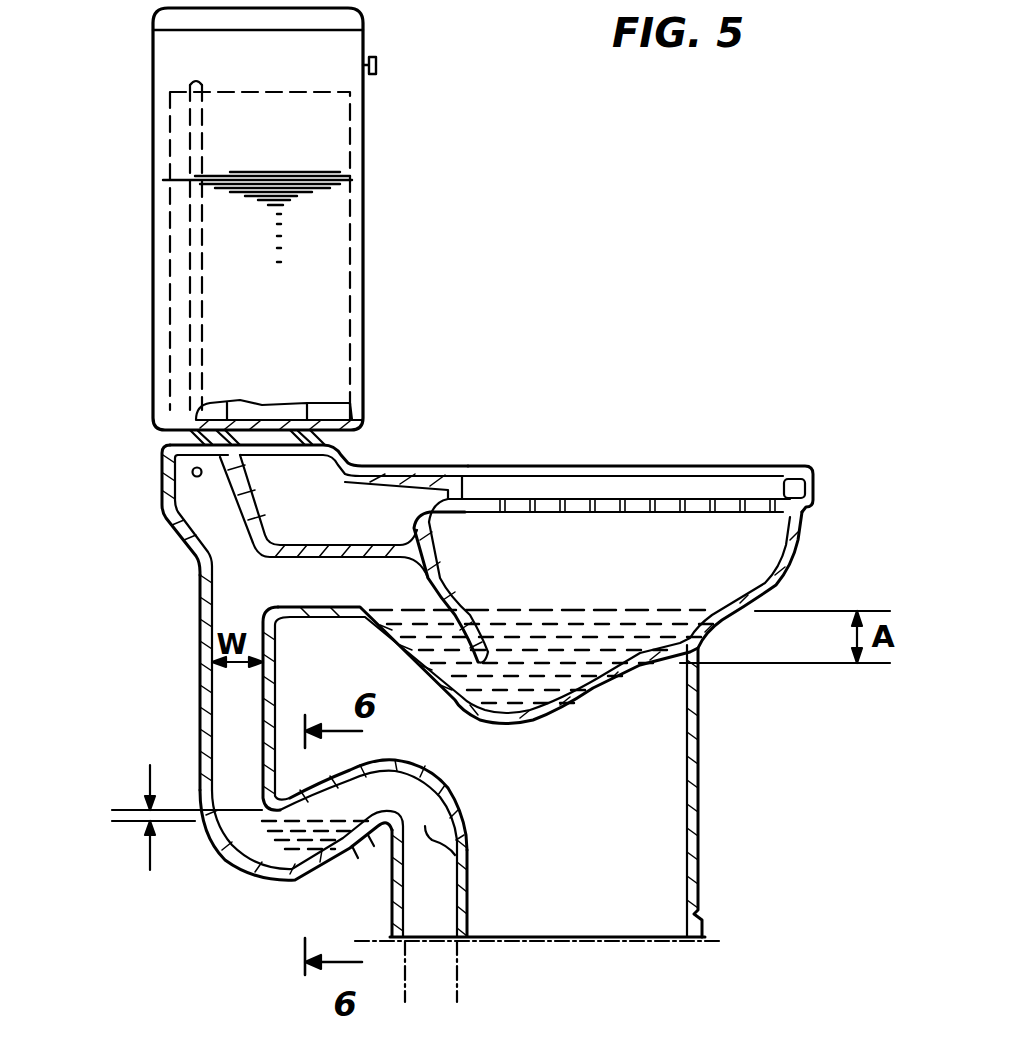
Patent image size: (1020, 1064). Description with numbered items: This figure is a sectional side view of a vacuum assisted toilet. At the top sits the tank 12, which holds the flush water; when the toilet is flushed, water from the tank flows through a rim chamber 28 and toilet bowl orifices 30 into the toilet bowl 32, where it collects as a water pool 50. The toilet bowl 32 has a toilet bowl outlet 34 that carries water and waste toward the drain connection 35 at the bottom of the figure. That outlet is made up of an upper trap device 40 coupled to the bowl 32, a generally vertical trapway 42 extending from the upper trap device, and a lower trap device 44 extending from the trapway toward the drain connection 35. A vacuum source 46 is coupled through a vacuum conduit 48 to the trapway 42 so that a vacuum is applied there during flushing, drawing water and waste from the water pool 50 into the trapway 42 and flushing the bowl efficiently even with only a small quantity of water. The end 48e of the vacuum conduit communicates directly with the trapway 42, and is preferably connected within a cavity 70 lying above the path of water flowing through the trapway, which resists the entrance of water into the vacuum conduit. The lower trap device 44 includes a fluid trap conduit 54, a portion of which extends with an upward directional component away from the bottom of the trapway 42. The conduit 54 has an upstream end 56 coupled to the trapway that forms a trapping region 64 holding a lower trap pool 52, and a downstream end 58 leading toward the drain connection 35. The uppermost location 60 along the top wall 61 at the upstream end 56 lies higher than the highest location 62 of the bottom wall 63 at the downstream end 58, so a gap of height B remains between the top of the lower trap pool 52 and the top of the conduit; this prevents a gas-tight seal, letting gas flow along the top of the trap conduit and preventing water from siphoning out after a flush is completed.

The tank 12 is at (366, 292).
The rim chamber 28 is at (398, 484).
The toilet bowl orifices 30 is at (650, 505).
The toilet bowl 32 is at (808, 542).
The toilet bowl outlet 34 is at (186, 607).
The outlet 35 is at (407, 1003).
The upper trap device 40 is at (460, 603).
The trapway 42 is at (222, 692).
The lower trap device 44 is at (230, 852).
The vacuum source 46 is at (172, 132).
The vacuum conduit 48 is at (195, 372).
The end of the vacuum conduit 48e is at (192, 473).
The water pool 50 is at (745, 590).
The lower trap pool 52 is at (262, 860).
The fluid trap conduit 54 is at (433, 790).
The upstream end 56 is at (235, 800).
The downstream end 58 is at (466, 855).
The uppermost location 60 is at (300, 802).
The top wall 61 is at (393, 760).
The highest location 62 is at (467, 826).
The bottom wall 63 is at (340, 850).
The trapping region 64 is at (306, 875).
The cavity 70 is at (178, 495).